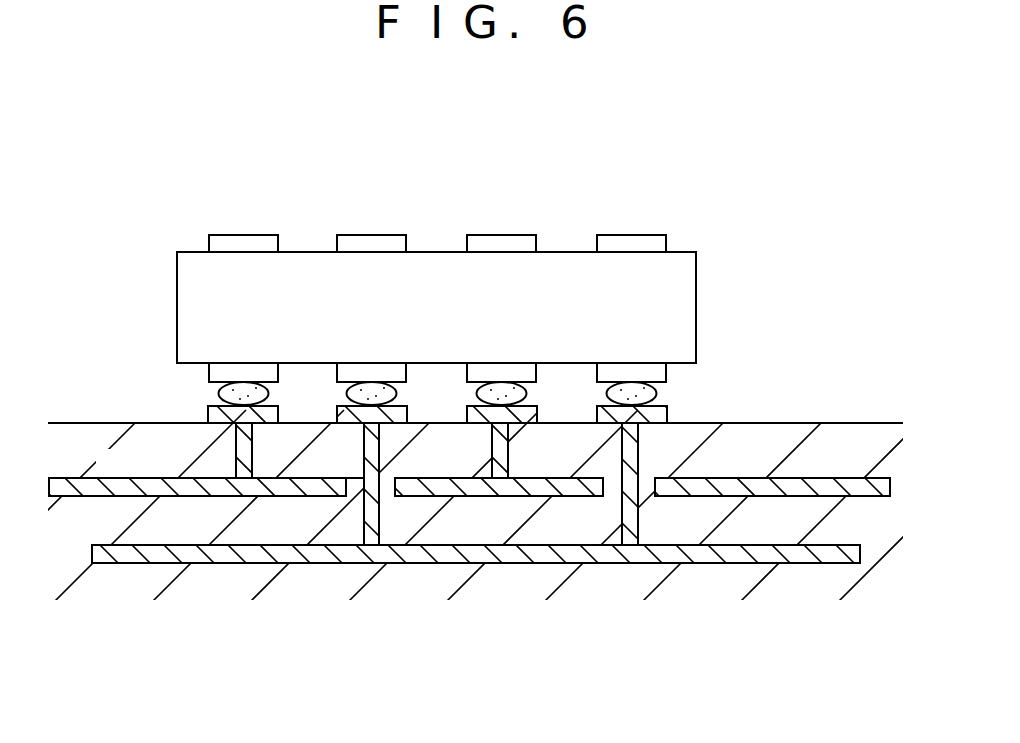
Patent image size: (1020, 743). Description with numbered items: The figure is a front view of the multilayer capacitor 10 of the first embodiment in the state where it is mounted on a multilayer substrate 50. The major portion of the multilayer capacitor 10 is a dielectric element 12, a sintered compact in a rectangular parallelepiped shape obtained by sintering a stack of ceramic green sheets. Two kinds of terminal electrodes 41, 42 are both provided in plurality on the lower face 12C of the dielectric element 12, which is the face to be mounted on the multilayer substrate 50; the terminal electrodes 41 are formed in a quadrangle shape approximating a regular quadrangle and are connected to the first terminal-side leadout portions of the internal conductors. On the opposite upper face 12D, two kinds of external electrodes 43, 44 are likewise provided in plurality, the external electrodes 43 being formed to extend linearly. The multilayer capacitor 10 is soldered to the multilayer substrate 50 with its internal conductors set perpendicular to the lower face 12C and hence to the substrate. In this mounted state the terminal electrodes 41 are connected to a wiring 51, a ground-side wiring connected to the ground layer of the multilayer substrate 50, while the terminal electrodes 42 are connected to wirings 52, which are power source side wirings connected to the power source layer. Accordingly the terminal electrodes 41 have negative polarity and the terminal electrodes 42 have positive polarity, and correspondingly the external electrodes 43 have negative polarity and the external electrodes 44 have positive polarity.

The multilayer capacitor 10 is at (485, 284).
The dielectric element 12 is at (697, 317).
The upper face 12D is at (683, 252).
The lower face 12C is at (690, 367).
The external electrode 43 is at (243, 235).
The external electrode 44 is at (372, 235).
The terminal electrode 41 is at (398, 386).
The terminal electrode 42 is at (269, 386).
The multilayer substrate 50 is at (510, 508).
The wiring 51 is at (743, 563).
The wiring 52 is at (130, 478).